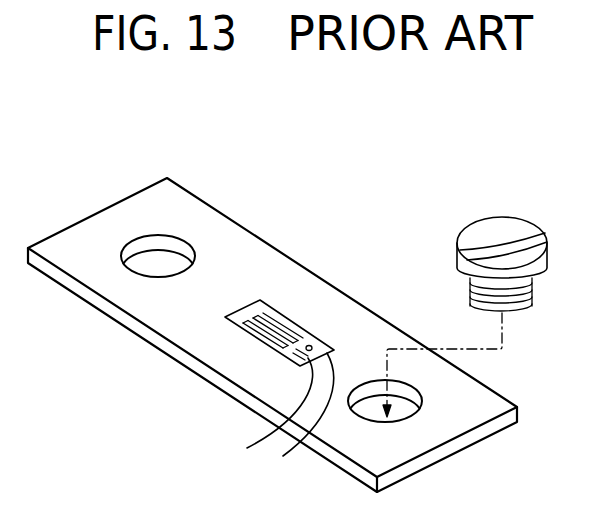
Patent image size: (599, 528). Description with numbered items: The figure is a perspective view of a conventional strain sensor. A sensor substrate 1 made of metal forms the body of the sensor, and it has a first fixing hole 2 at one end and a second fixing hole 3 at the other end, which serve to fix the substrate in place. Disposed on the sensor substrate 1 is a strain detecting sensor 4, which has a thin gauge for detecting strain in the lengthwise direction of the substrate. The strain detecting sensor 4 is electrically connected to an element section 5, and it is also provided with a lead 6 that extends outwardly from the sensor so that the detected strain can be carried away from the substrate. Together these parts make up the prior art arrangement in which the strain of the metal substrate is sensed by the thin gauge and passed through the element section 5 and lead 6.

The sensor substrate 1 is at (167, 333).
The first fixing hole 2 is at (137, 270).
The second fixing hole 3 is at (407, 412).
The strain detecting sensor 4 is at (249, 307).
The element section 5 is at (285, 323).
The lead 6 is at (290, 414).